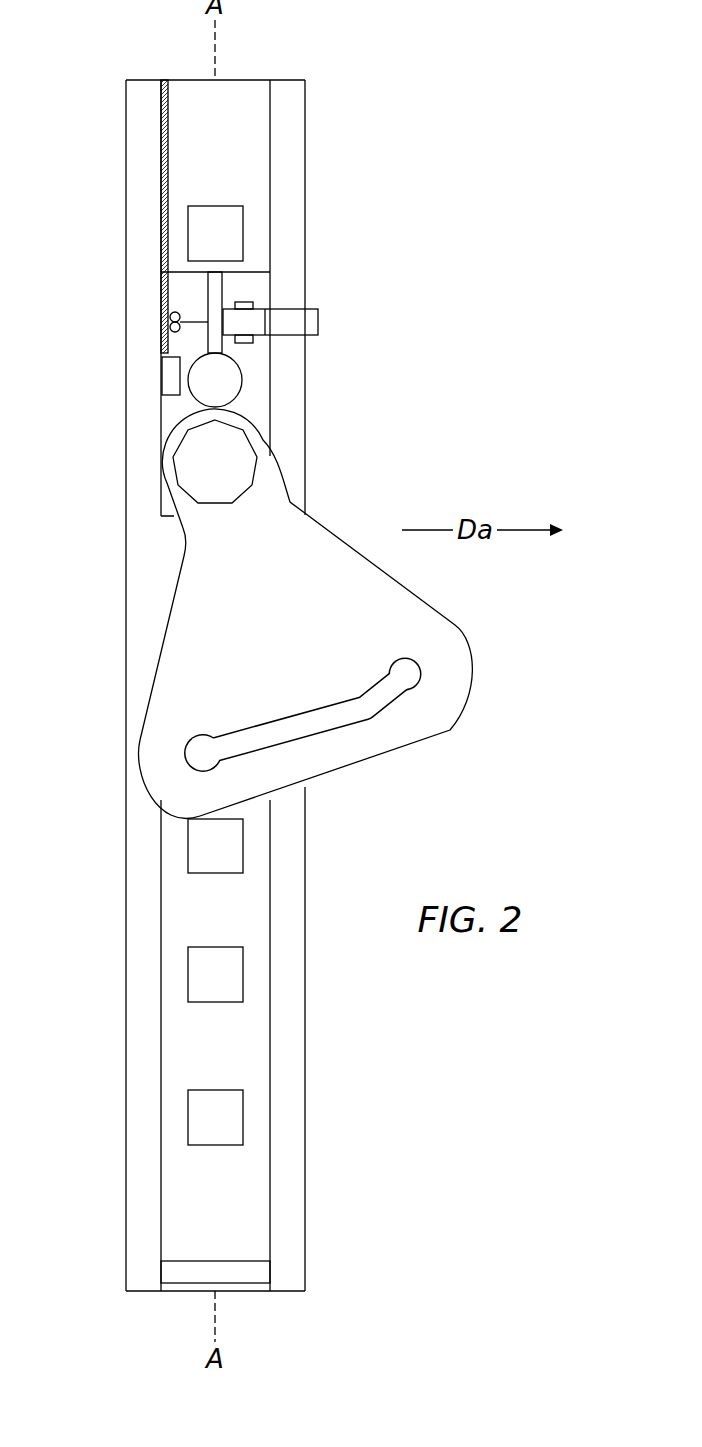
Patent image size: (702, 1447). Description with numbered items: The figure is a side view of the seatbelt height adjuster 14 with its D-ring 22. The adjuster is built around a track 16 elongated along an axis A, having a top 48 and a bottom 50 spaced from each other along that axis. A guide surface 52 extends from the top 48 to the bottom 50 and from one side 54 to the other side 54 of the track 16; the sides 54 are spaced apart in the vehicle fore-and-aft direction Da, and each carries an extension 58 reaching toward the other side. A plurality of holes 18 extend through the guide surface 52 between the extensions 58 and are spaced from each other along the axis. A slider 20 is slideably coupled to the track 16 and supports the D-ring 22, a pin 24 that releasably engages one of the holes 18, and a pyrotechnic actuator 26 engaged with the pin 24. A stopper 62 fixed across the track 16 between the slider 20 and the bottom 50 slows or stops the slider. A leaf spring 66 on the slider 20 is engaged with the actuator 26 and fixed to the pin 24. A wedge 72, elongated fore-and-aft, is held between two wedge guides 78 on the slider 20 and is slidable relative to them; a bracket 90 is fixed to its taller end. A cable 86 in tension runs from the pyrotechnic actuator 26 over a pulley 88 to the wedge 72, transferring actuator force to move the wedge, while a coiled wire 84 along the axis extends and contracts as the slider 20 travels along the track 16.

The seatbelt height adjuster 14 is at (478, 92).
The track 16 is at (221, 681).
The holes 18 is at (216, 206).
The slider 20 is at (254, 268).
The D-ring 22 is at (474, 676).
The pin 24 is at (234, 399).
The pyrotechnic actuator 26 is at (125, 394).
The top 48 is at (246, 80).
The bottom 50 is at (250, 1292).
The guide surface 52 is at (205, 1210).
The sides 54 is at (306, 1135).
The extensions 58 is at (133, 182).
The stopper 62 is at (247, 1260).
The leaf spring 66 is at (206, 288).
The wedge 72 is at (310, 328).
The wedge guides 78 is at (246, 302).
The wire 84 is at (162, 230).
The cable 86 is at (182, 343).
The pulley 88 is at (171, 312).
The bracket 90 is at (322, 323).